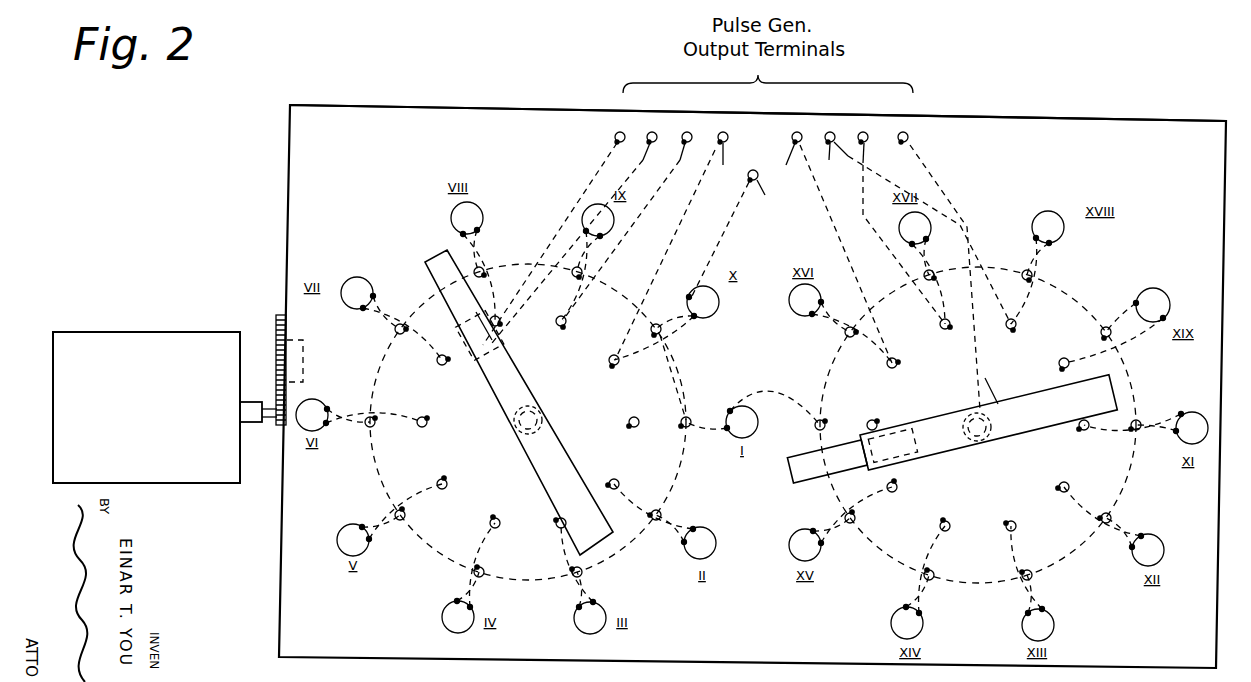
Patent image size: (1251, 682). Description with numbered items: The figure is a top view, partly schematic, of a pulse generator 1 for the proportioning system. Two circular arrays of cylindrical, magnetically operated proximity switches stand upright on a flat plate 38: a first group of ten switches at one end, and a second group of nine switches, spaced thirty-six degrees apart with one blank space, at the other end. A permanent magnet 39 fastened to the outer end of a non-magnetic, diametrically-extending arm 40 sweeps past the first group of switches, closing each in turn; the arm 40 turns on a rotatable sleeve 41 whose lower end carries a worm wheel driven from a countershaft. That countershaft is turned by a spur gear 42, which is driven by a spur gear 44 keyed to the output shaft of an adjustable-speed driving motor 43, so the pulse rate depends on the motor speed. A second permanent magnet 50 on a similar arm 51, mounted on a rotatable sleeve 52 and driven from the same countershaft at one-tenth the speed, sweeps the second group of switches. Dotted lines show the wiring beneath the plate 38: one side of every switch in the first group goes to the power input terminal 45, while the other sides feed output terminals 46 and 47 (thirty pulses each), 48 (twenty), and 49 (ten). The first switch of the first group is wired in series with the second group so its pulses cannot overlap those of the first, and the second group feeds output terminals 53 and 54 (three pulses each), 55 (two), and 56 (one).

The pulse generator 1 is at (1024, 111).
The flat plate 38 is at (388, 107).
The permanent magnet 39 is at (439, 268).
The diametrically-extending arm 40 is at (567, 442).
The rotatable sleeve 41 is at (538, 414).
The spur gear 42 is at (279, 318).
The driving motor 43 is at (137, 343).
The spur gear 44 is at (278, 427).
The input terminal 45 is at (752, 233).
The pulse generator output terminal 46 is at (614, 140).
The pulse generator output terminal 47 is at (675, 239).
The pulse generator output terminal 48 is at (628, 219).
The pulse generator output terminal 49 is at (575, 230).
The permanent magnet 50 is at (800, 470).
The diametrically-extending arm 51 is at (985, 379).
The rotatable sleeve 52 is at (960, 417).
The pulse generator output terminal 53 is at (832, 240).
The pulse generator output terminal 54 is at (910, 139).
The pulse generator output terminal 55 is at (901, 221).
The pulse generator output terminal 56 is at (914, 221).